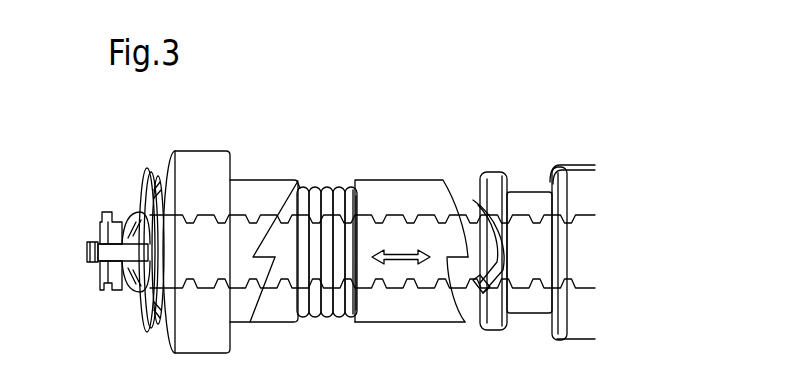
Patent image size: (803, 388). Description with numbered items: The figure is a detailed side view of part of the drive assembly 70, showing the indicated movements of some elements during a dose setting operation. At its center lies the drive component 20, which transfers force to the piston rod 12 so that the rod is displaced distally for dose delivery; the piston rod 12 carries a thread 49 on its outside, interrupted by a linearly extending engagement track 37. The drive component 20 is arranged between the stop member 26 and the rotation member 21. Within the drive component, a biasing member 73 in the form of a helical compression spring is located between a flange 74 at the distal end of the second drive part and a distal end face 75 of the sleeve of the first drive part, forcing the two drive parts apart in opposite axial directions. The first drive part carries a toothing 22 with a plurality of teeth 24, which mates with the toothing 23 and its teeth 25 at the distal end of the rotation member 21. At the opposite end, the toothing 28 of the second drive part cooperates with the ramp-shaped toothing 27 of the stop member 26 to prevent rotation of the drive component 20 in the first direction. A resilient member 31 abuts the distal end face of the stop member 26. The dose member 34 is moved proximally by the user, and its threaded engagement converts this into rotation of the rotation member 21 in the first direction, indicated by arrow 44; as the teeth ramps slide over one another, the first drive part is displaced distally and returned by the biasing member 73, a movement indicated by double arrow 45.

The drive assembly 70 is at (335, 118).
The drive component 20 is at (460, 332).
The engagement track 37 is at (113, 252).
The piston rod 12 is at (133, 273).
The thread 49 is at (142, 218).
The resilient member 31 is at (148, 330).
The stop member 26 is at (241, 192).
The second engagement means 28 is at (262, 245).
The mating second engagement means 27 is at (265, 268).
The biasing member 73 is at (320, 315).
The flange 74 is at (297, 181).
The distal end face 75 is at (347, 192).
The first engagement means 22 is at (450, 195).
The double arrow 45 is at (403, 263).
The first mating engagement means 23 is at (462, 305).
The teeth 25 is at (458, 263).
The teeth 24 is at (458, 250).
The rotation member 21 is at (466, 188).
The arrow 44 is at (497, 290).
The dose member 34 is at (577, 178).